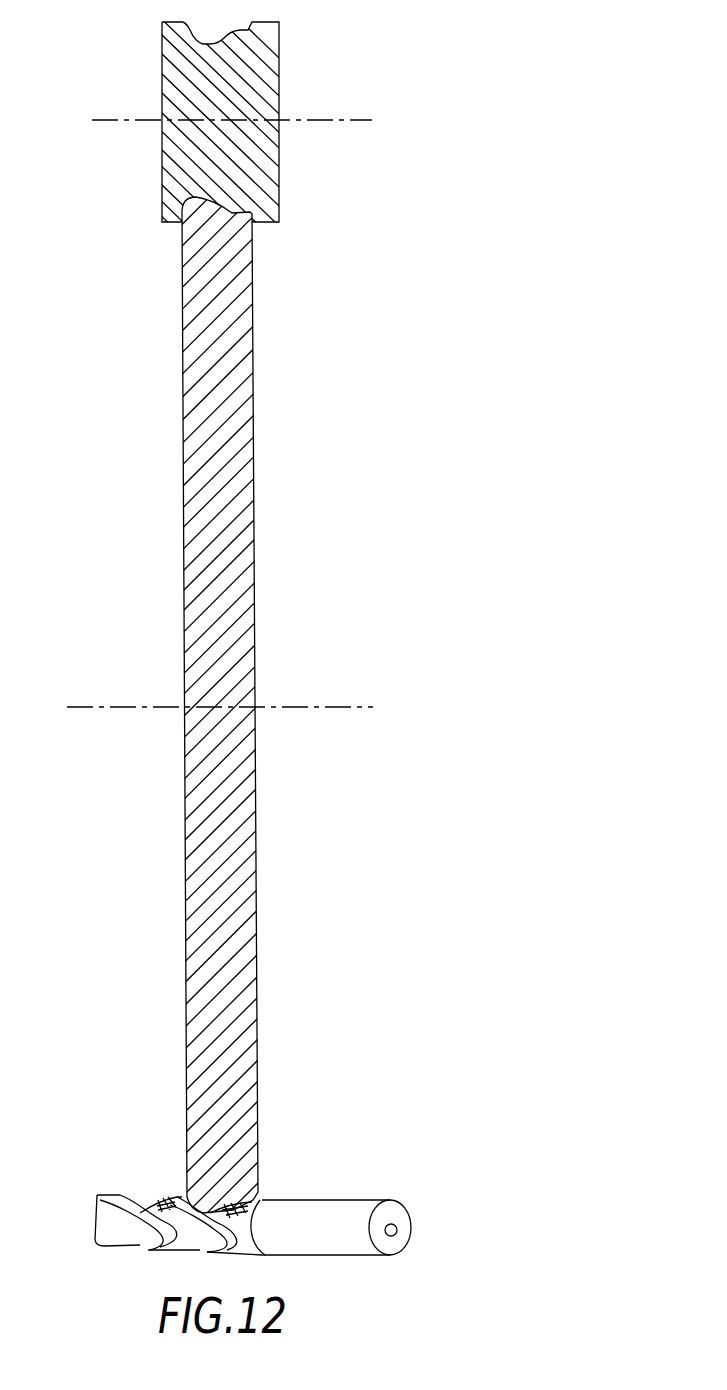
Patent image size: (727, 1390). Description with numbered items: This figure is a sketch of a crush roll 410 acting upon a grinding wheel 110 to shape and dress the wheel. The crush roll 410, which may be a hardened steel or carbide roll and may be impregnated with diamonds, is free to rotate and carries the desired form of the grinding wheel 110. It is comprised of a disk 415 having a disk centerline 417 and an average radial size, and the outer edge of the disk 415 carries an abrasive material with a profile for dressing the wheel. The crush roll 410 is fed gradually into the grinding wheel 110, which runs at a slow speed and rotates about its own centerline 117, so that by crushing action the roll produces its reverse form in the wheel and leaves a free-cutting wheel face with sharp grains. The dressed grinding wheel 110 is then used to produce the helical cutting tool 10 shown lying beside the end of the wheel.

The helical cutting tool 10 is at (375, 1167).
The grinding wheel 110 is at (255, 438).
The grinding wheel centerline 117 is at (115, 707).
The crush roll 410 is at (280, 63).
The disk 415 is at (280, 172).
The disk centerline 417 is at (116, 120).